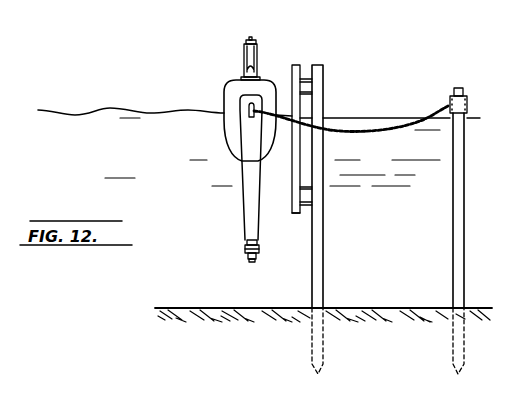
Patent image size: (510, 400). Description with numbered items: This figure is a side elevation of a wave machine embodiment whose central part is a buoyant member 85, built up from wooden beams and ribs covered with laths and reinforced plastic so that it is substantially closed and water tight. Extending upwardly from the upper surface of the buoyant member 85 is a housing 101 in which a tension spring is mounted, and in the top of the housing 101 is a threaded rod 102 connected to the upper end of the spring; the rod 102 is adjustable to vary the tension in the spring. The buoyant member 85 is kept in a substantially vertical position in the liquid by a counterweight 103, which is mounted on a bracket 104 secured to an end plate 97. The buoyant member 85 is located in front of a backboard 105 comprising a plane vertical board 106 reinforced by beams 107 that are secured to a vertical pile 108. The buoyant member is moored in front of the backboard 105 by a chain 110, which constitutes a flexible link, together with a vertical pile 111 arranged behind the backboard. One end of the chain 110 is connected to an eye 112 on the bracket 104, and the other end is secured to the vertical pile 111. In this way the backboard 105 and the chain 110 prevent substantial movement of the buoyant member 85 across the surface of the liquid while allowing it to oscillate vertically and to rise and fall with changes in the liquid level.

The buoyant member 85 is at (217, 79).
The end plate 97 is at (226, 100).
The housing 101 is at (257, 50).
The threaded rod 102 is at (250, 38).
The counterweight 103 is at (246, 252).
The bracket 104 is at (243, 228).
The backboard 105 is at (341, 68).
The plane vertical board 106 is at (296, 215).
The beam 107 is at (302, 73).
The vertical pile 108 is at (323, 282).
The chain 110 is at (437, 113).
The vertical pile 111 is at (463, 255).
The eye 112 is at (250, 108).